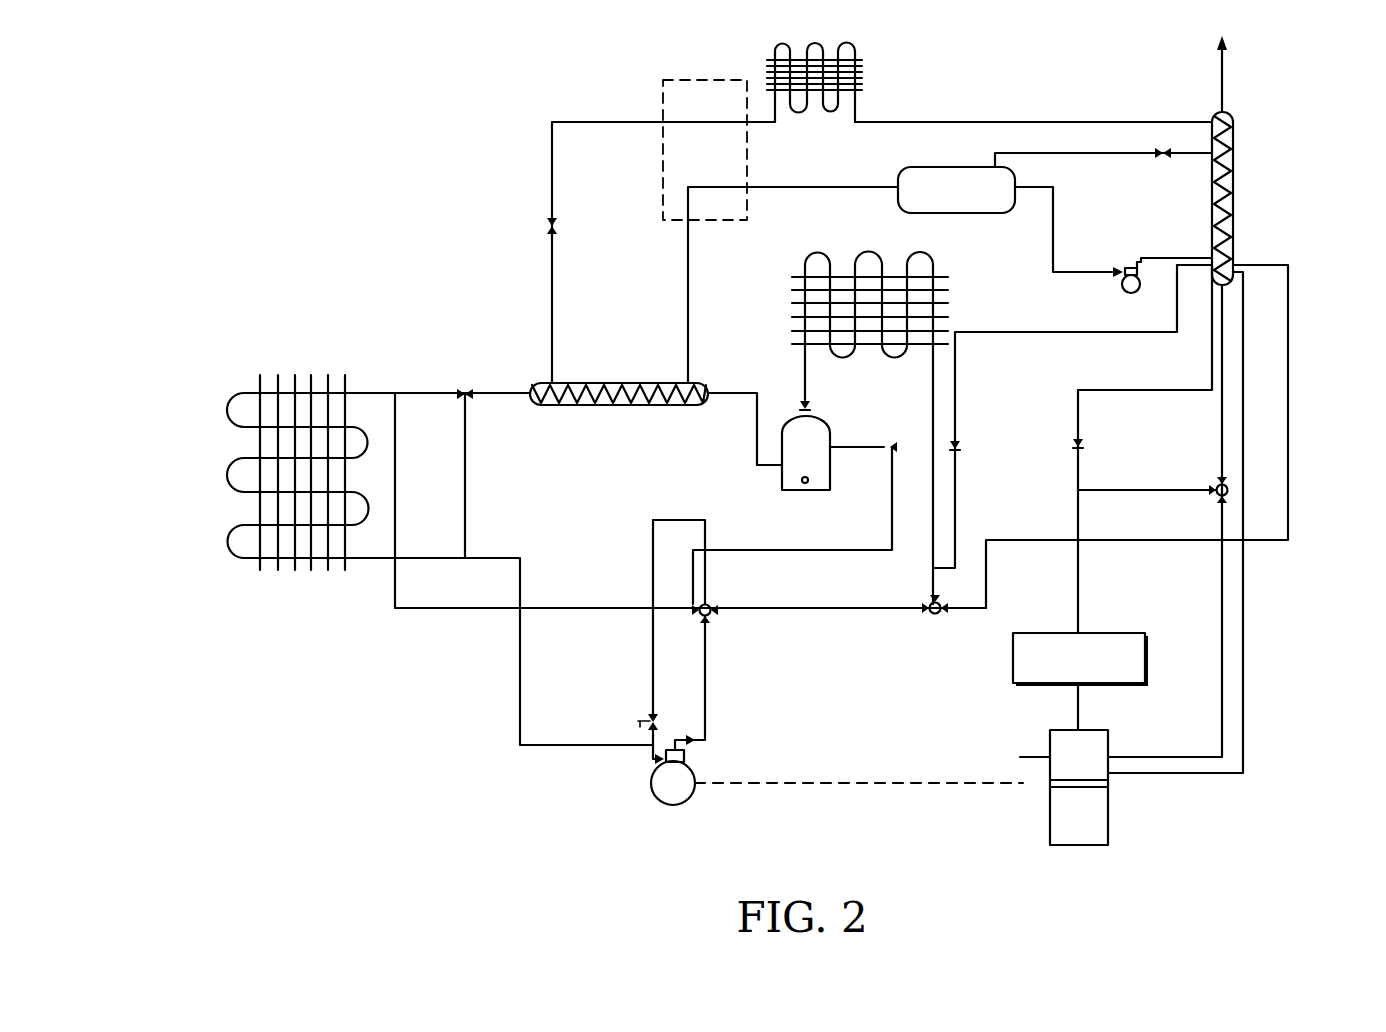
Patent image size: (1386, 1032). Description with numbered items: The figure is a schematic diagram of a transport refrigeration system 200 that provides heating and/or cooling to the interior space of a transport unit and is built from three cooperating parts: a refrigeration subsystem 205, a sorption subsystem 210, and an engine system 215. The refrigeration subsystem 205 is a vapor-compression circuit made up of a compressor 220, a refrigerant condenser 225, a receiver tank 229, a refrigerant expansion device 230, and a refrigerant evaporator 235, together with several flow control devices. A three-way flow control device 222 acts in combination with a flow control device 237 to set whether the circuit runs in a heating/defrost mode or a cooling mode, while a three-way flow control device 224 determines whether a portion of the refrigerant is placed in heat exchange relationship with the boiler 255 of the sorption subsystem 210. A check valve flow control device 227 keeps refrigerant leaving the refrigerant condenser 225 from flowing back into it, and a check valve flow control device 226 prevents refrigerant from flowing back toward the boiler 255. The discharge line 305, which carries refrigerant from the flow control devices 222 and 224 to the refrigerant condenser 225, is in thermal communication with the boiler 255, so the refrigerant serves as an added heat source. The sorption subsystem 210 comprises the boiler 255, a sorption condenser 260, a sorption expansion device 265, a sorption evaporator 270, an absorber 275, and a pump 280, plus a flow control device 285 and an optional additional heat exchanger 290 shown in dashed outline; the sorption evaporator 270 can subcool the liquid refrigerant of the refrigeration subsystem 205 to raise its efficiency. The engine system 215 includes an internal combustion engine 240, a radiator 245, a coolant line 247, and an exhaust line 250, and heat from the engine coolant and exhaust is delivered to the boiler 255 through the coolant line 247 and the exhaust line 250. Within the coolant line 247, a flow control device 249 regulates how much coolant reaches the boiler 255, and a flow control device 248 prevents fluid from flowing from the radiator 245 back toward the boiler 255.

The transport refrigeration system 200 is at (268, 170).
The refrigeration subsystem 205 is at (196, 515).
The sorption subsystem 210 is at (1306, 220).
The engine system 215 is at (1172, 826).
The compressor 220 is at (650, 783).
The flow control device 222 is at (718, 614).
The flow control device 224 is at (935, 621).
The refrigerant condenser 225 is at (949, 300).
The flow control device 226 is at (961, 447).
The flow control device 227 is at (815, 408).
The receiver tank 229 is at (778, 477).
The refrigerant expansion device 230 is at (465, 388).
The refrigerant evaporator 235 is at (297, 575).
The flow control device 237 is at (648, 718).
The internal combustion engine 240 is at (1080, 790).
The radiator 245 is at (1120, 632).
The coolant line 247 is at (1076, 486).
The flow control device 248 is at (1086, 445).
The flow control device 249 is at (1215, 496).
The exhaust line 250 is at (1245, 599).
The boiler 255 is at (1236, 163).
The sorption condenser 260 is at (849, 45).
The sorption expansion device 265 is at (546, 226).
The sorption evaporator 270 is at (580, 381).
The absorber 275 is at (926, 166).
The pump 280 is at (1130, 266).
The flow control device 285 is at (1163, 147).
The additional heat exchanger 290 is at (688, 78).
The discharge line 305 is at (1265, 542).